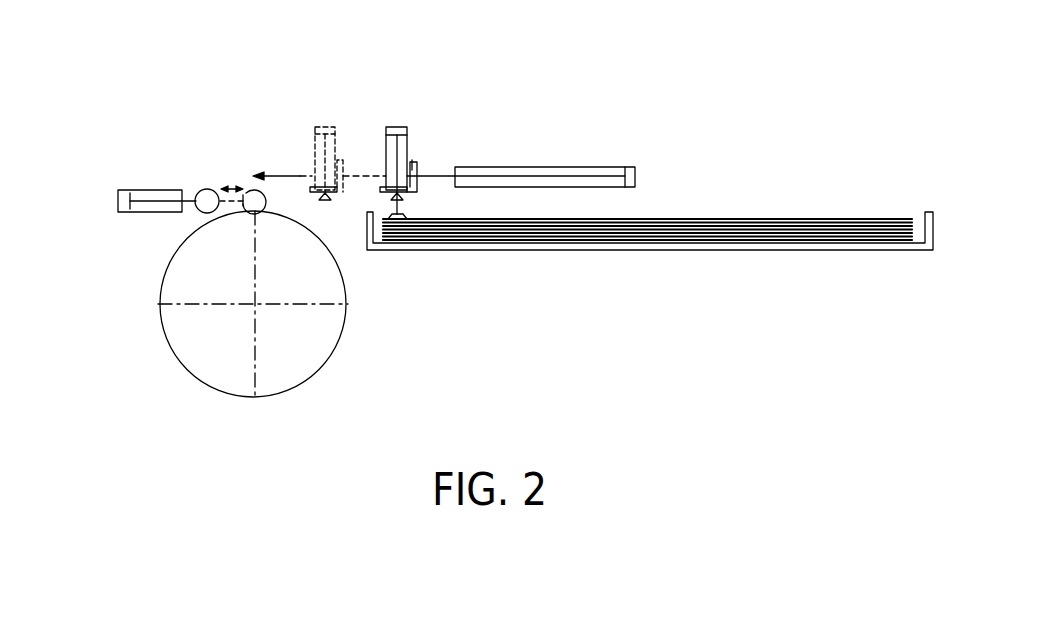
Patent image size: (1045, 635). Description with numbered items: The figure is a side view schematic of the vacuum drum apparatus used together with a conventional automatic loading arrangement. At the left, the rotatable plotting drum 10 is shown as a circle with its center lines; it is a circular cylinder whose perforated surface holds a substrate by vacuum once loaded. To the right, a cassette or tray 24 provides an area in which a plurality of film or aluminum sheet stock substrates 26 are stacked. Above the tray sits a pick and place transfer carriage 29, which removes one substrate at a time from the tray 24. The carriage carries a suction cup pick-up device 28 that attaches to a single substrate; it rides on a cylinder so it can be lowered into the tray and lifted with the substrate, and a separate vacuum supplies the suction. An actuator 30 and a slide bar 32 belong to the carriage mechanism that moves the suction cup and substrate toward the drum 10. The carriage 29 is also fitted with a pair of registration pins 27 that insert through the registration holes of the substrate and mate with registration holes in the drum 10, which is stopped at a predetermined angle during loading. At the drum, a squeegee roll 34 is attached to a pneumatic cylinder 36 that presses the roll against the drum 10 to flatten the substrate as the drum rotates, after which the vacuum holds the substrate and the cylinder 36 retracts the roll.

The rotatable plotting drum 10 is at (342, 343).
The cassette or tray 24 is at (655, 248).
The stack of sheets 26 is at (742, 223).
The registration pins 27 is at (397, 207).
The suction cup pick-up device 28 is at (405, 199).
The pick and place transfer carriage 29 is at (415, 162).
The solenoid 30 is at (387, 142).
The slide bar 32 is at (495, 167).
The roller 34 is at (207, 189).
The pneumatic cylinder 36 is at (120, 190).